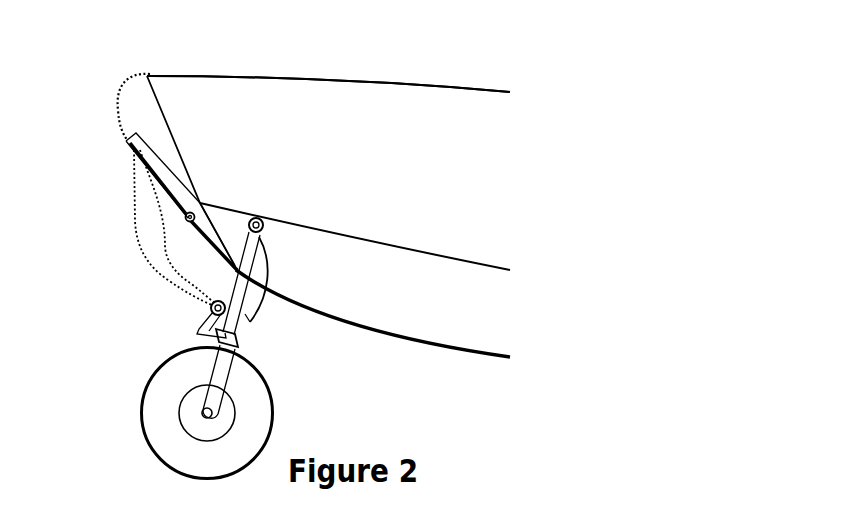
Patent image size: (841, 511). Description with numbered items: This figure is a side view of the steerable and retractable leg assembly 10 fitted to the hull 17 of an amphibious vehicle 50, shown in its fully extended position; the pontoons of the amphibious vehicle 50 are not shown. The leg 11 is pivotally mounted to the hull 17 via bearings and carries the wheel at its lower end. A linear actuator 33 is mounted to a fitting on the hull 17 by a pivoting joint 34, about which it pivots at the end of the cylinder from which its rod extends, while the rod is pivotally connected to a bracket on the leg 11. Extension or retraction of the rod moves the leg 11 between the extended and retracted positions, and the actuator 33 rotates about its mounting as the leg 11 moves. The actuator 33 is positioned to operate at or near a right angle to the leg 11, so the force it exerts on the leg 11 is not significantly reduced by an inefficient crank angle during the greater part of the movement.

The steerable and retractable leg assembly 10 is at (184, 314).
The leg 11 is at (247, 312).
The hull 17 is at (216, 76).
The linear actuator 33 is at (136, 148).
The pivoting joint 34 is at (188, 220).
The amphibious vehicle 50 is at (314, 215).